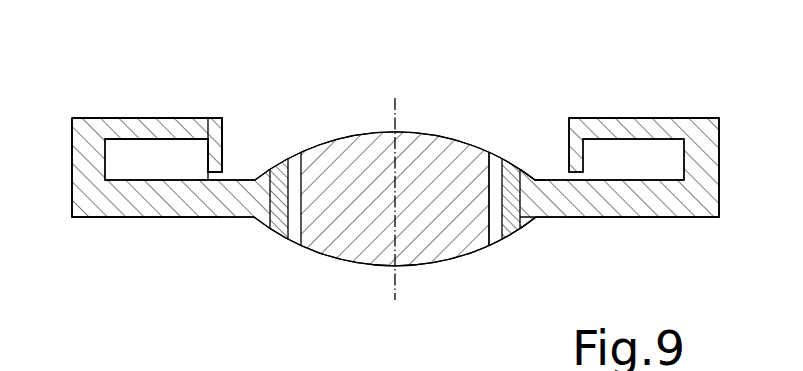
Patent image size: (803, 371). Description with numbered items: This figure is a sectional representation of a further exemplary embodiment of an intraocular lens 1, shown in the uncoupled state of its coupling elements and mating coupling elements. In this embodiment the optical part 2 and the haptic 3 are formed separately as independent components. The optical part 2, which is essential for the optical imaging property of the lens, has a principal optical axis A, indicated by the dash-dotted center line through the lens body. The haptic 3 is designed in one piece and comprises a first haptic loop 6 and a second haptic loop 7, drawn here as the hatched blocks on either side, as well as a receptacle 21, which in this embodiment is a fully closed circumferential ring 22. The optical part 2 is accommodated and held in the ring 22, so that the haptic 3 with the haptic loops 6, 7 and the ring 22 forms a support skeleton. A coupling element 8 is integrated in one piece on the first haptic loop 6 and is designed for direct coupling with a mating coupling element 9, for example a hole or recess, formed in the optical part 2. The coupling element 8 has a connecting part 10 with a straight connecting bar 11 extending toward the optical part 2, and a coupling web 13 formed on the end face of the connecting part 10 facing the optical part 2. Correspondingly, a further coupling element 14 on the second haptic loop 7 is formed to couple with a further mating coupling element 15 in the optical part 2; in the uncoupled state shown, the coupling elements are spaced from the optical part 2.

The intraocular lens 1 is at (515, 90).
The optical part 2 is at (333, 268).
The haptic 3 is at (192, 247).
The first haptic loop 6 is at (113, 227).
The second haptic loop 7 is at (678, 227).
The coupling element 8 is at (210, 110).
The mating coupling element 9 is at (292, 150).
The connecting part 10 is at (122, 102).
The connecting bar 11 is at (168, 128).
The coupling web 13 is at (224, 148).
The further coupling element 14 is at (667, 110).
The further mating coupling element 15 is at (489, 133).
The receptacle 21 is at (532, 227).
The ring 22 is at (530, 180).
The principal optical axis A is at (396, 100).